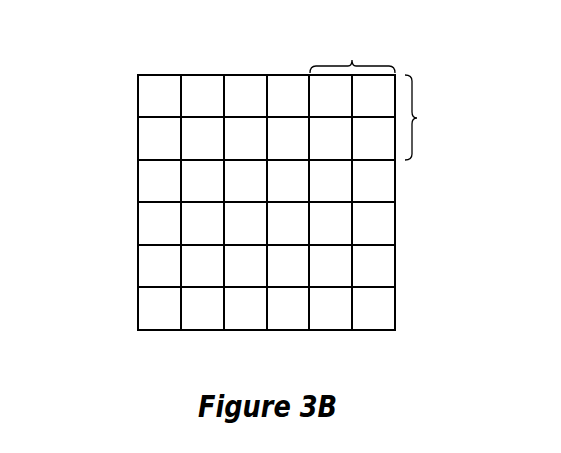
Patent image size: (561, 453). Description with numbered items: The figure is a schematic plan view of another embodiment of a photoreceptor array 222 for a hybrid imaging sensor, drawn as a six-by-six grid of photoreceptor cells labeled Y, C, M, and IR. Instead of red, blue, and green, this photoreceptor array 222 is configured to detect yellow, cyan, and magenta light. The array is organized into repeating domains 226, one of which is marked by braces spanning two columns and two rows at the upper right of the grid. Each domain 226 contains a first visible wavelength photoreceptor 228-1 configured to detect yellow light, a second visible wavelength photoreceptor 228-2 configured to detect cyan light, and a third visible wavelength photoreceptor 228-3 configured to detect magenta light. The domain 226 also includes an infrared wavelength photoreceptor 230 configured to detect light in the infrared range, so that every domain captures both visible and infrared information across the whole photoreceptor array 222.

The photoreceptor array 222 is at (436, 61).
The domain 226 is at (379, 95).
The first visible wavelength photoreceptor 228-1 is at (162, 82).
The second visible wavelength photoreceptor 228-2 is at (205, 82).
The third visible wavelength photoreceptor 228-3 is at (218, 125).
The infrared wavelength photoreceptor 230 is at (140, 135).